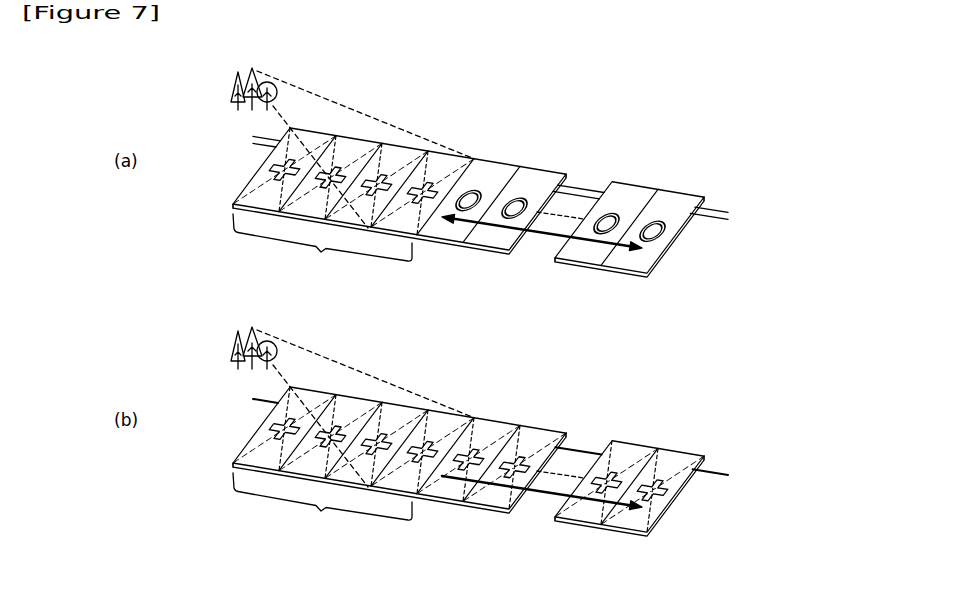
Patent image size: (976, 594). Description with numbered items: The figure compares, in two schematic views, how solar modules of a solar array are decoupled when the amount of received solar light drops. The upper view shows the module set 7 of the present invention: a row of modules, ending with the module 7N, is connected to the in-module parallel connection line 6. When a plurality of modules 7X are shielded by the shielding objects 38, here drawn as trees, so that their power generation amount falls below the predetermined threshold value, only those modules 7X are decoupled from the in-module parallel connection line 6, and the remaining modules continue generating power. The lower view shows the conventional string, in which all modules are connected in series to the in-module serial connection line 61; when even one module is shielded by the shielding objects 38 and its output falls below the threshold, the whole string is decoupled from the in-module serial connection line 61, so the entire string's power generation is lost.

The shielding objects 38 is at (232, 87).
The module set 7 is at (471, 335).
The module 7N is at (675, 191).
The modules 7X is at (353, 337).
The in-module parallel connection line 6 is at (700, 217).
The in-module serial connection line 61 is at (697, 472).